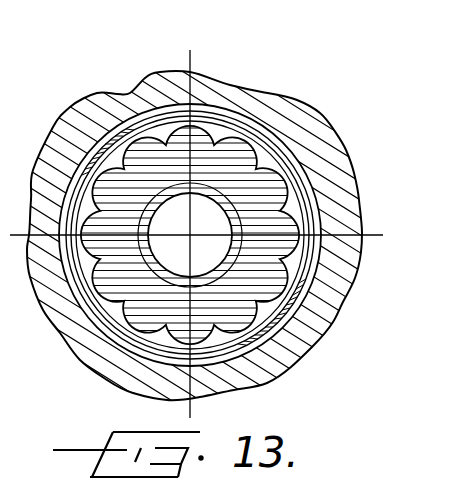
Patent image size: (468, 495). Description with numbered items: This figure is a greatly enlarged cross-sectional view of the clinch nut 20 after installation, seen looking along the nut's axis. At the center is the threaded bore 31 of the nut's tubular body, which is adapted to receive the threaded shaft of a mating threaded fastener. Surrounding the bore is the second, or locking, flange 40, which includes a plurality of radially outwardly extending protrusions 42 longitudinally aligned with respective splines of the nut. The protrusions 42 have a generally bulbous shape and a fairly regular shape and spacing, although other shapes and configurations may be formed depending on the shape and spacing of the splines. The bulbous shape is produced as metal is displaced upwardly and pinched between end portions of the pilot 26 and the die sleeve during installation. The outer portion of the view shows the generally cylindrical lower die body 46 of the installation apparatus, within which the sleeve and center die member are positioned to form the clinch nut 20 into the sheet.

The clinch nut 20 is at (282, 66).
The pilot 26 is at (232, 118).
The threaded bore 31 is at (199, 245).
The second, or locking, flange 40 is at (301, 293).
The protrusions 42 is at (277, 190).
The lower die body 46 is at (333, 172).